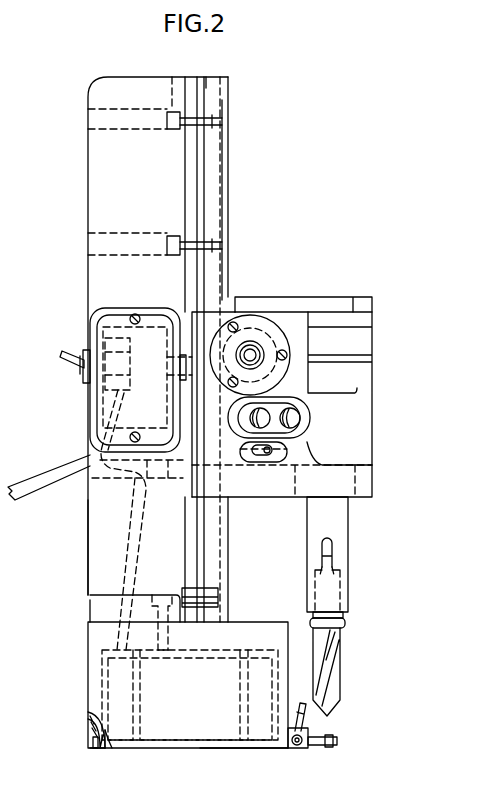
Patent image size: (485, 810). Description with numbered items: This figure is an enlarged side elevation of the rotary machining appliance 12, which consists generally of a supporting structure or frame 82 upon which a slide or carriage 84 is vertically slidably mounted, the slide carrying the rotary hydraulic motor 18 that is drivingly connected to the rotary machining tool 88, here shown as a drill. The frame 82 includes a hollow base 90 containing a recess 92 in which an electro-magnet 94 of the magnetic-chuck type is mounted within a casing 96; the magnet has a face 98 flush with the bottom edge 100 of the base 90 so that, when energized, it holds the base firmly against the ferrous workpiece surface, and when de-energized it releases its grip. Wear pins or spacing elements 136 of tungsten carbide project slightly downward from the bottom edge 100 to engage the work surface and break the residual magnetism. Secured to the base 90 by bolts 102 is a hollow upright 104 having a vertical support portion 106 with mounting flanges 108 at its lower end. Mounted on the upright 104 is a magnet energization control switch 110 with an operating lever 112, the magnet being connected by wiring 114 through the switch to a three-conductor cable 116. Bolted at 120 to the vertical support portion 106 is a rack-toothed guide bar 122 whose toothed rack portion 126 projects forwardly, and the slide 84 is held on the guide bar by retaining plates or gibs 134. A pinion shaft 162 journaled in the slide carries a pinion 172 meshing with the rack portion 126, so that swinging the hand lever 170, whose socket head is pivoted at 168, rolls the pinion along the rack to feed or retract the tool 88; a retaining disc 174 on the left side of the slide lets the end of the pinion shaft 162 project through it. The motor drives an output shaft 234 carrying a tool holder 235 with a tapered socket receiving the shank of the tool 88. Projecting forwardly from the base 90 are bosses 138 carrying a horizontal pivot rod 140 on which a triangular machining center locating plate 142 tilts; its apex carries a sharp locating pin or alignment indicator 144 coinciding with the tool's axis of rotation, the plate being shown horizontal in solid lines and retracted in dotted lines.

The rotary machining appliance 12 is at (232, 73).
The rotary hydraulic motor 18 is at (374, 345).
The supporting structure or frame 82 is at (90, 597).
The slide or carriage 84 is at (303, 312).
The rotary machining tool 88 is at (348, 627).
The hollow base 90 is at (88, 687).
The recess 92 is at (88, 734).
The electro-magnet 94 is at (107, 752).
The casing 96 is at (112, 745).
The face 98 is at (236, 748).
The bottom edge 100 is at (93, 748).
The bolts 102 is at (165, 595).
The upright 104 is at (88, 547).
The vertical support portion 106 is at (106, 188).
The mounting flanges 108 is at (103, 610).
The magnet energization control switch 110 is at (114, 338).
The operating lever 112 is at (64, 352).
The wiring 114 is at (122, 400).
The three-conductor cable 116 is at (55, 470).
The bolts 120 is at (172, 77).
The rack-toothed guide bar 122 is at (213, 77).
The toothed rack portion 126 is at (228, 170).
The retaining plates or gibs 134 is at (193, 312).
The wear pins or spacing elements 136 is at (97, 752).
The bosses 138 is at (308, 736).
The pivot rod 140 is at (293, 750).
The machining center locating plate 142 is at (338, 741).
The locating pin or alignment indicator 144 is at (331, 748).
The pinion shaft 162 is at (256, 352).
The pivot 168 is at (31, 804).
The hand lever 170 is at (100, 801).
The pinion 172 is at (251, 312).
The retaining disc 174 is at (265, 330).
The output shaft 234 is at (348, 523).
The tool holder 235 is at (348, 590).